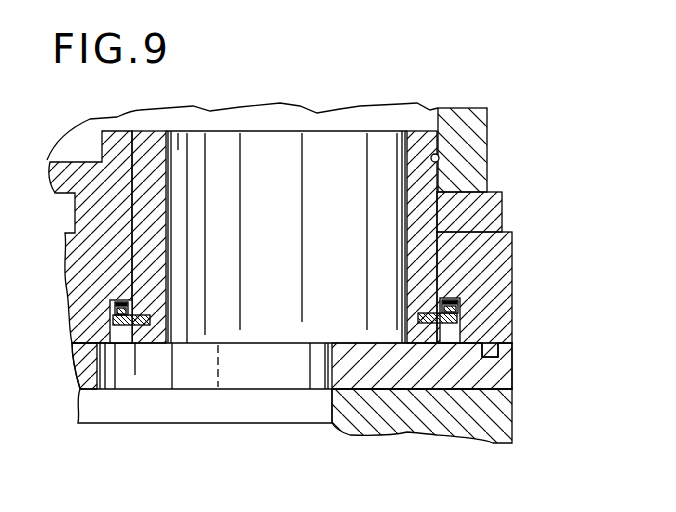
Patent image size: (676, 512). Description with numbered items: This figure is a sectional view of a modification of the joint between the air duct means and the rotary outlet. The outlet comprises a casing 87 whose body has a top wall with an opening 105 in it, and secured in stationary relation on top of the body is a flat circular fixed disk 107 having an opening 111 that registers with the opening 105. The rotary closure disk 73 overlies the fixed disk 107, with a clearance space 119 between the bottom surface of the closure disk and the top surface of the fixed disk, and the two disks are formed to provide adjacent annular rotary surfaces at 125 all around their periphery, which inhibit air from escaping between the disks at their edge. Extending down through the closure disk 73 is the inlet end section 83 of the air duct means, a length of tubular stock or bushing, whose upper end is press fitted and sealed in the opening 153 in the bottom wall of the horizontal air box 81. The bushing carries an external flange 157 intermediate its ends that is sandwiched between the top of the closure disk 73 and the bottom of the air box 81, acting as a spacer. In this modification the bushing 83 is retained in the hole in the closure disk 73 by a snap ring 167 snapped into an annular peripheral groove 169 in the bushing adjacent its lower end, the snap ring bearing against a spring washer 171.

The inlet end section 83 is at (317, 113).
The horizontal section 81 is at (487, 107).
The opening 153 is at (439, 157).
The external flange 157 is at (503, 210).
The closure disk 73 is at (513, 253).
The spring washer 171 is at (463, 300).
The snap ring 167 is at (465, 320).
The annular peripheral groove 169 is at (417, 313).
The annular rotary surfaces 125 is at (510, 351).
The casing 87 is at (522, 430).
The clearance space 119 is at (72, 343).
The fixed disk 107 is at (72, 377).
The opening 105 is at (138, 408).
The opening 111 is at (248, 373).